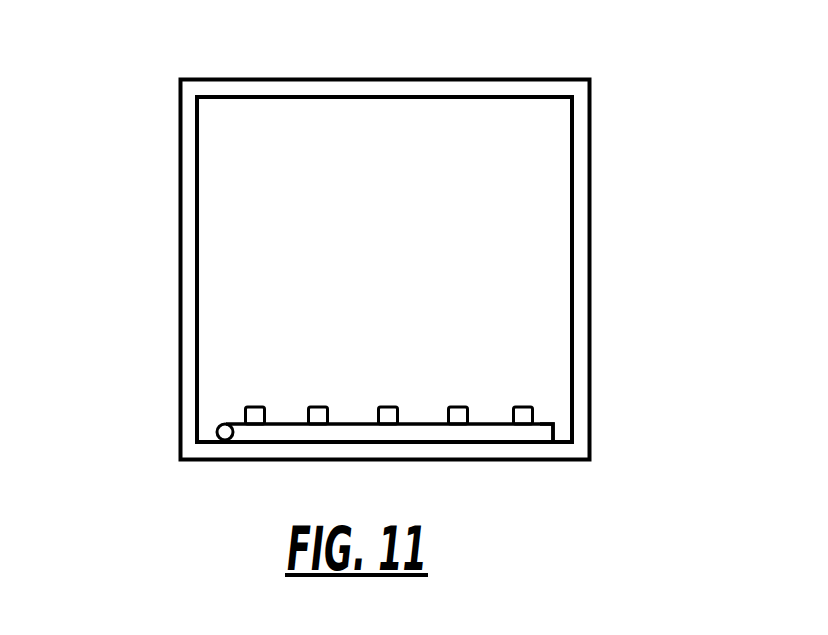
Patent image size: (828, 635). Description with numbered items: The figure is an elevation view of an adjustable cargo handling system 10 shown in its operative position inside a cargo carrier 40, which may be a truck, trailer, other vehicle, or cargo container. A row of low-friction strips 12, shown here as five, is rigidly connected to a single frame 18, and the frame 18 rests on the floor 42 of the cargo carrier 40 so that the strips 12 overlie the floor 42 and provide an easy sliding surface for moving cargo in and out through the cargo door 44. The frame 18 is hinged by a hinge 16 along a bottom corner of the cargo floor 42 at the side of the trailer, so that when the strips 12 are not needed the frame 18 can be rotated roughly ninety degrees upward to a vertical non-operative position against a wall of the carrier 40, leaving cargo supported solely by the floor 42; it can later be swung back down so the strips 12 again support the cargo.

The adjustable cargo handling system 10 is at (280, 353).
The strips 12 is at (458, 407).
The hinge 16 is at (228, 440).
The frame 18 is at (488, 432).
The cargo carrier 40 is at (590, 182).
The floor 42 is at (558, 440).
The cargo door 44 is at (448, 97).